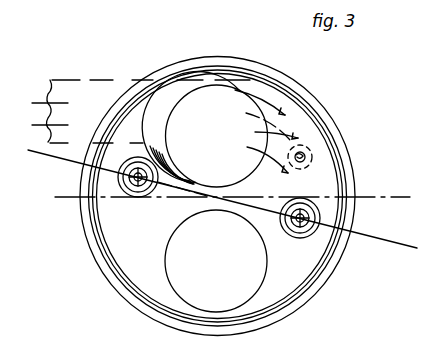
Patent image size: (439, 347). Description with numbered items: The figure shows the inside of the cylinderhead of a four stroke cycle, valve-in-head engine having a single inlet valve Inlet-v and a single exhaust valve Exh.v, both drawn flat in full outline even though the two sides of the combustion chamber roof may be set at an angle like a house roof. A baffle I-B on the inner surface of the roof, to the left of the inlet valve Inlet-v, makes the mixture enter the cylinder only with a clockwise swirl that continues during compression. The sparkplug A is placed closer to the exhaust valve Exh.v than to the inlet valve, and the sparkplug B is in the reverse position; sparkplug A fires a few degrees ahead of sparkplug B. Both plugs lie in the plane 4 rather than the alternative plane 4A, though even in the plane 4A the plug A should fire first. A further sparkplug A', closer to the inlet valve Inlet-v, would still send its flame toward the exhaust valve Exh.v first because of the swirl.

The baffle I-B is at (157, 97).
The sparkplug A' is at (325, 145).
The sparkplug A is at (300, 229).
The sparkplug B is at (140, 197).
The plane 4- 4 is at (43, 156).
The plane 4a-4a 4A is at (72, 197).
The inlet valve Inlet-v is at (217, 136).
The exhaust valve Exh.v is at (216, 261).